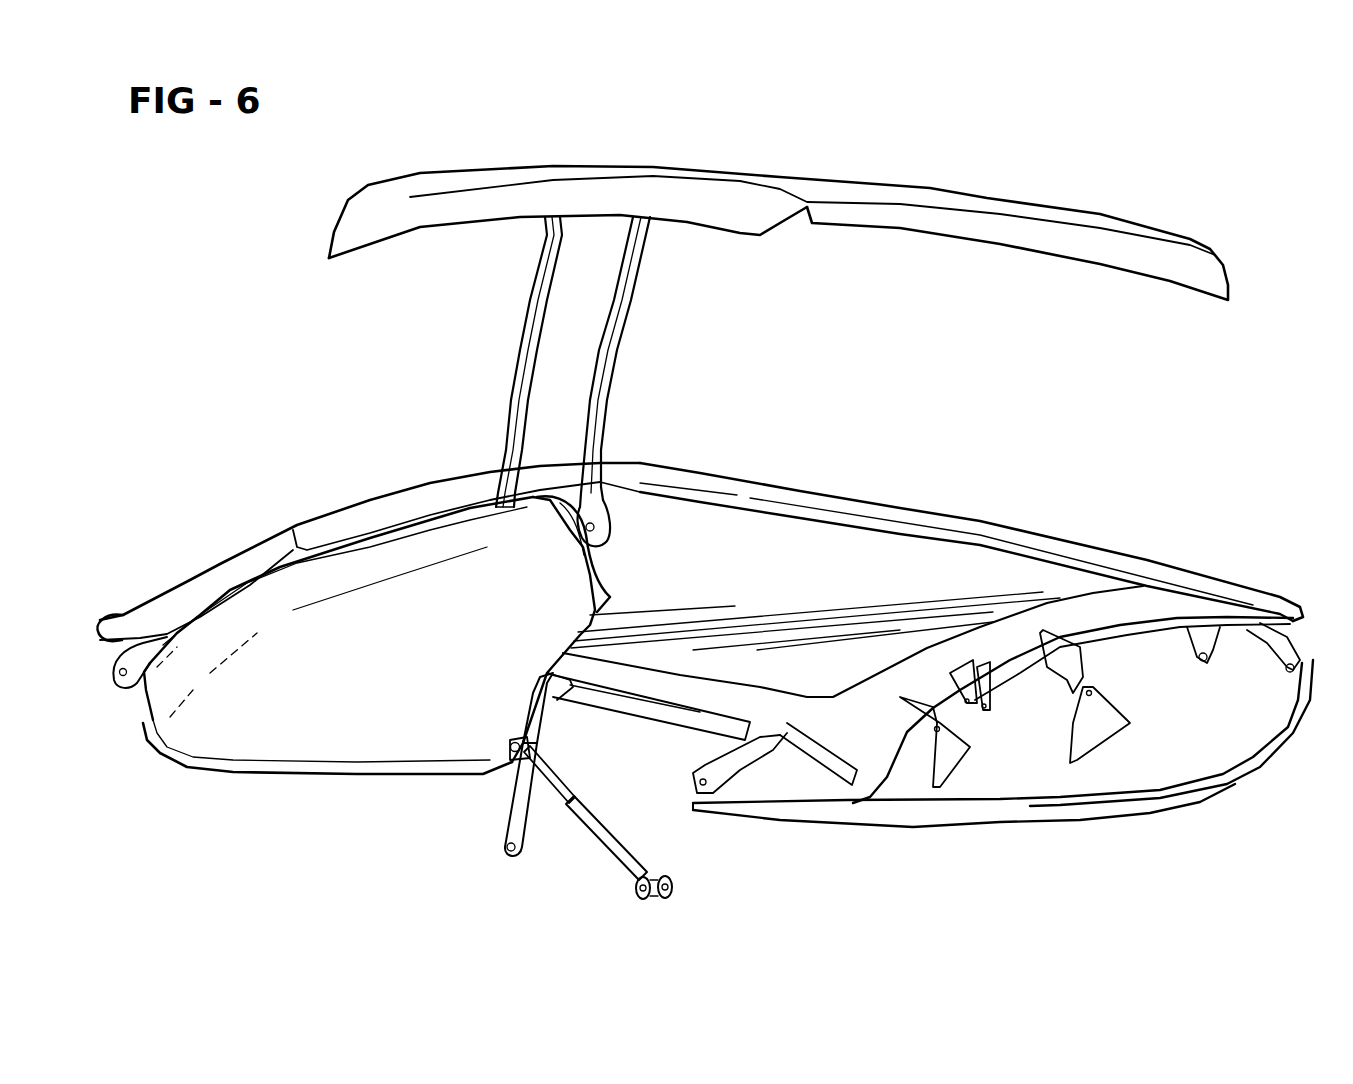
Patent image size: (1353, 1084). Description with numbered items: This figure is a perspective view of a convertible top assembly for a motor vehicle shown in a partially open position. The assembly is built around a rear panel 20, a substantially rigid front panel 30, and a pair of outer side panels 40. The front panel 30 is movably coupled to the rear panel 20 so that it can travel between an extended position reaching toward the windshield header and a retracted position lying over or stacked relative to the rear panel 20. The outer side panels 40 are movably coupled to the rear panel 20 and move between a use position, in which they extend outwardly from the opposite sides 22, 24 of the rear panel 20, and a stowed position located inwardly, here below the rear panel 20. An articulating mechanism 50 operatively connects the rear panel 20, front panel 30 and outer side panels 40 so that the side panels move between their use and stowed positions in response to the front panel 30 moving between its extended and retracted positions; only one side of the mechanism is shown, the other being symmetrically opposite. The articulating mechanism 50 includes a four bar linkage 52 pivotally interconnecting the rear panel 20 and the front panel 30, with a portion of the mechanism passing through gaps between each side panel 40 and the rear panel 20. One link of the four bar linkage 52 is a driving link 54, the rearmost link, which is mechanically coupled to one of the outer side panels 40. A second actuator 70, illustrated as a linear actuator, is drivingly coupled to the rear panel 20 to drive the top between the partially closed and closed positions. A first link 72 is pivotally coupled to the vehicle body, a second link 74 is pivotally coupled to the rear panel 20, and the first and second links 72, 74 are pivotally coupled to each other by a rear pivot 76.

The rear panel 20 is at (973, 527).
The side of the rear panel 22 is at (223, 567).
The side of the rear panel 24 is at (1150, 633).
The front panel 30 is at (927, 197).
The outer side panel 40 is at (353, 733).
The articulating mechanism 50 is at (452, 353).
The four bar linkage 52 is at (613, 317).
The driving link 54 is at (510, 400).
The second actuator 70 is at (603, 843).
The first link 72 is at (513, 813).
The second link 74 is at (540, 720).
The rear pivot 76 is at (510, 783).